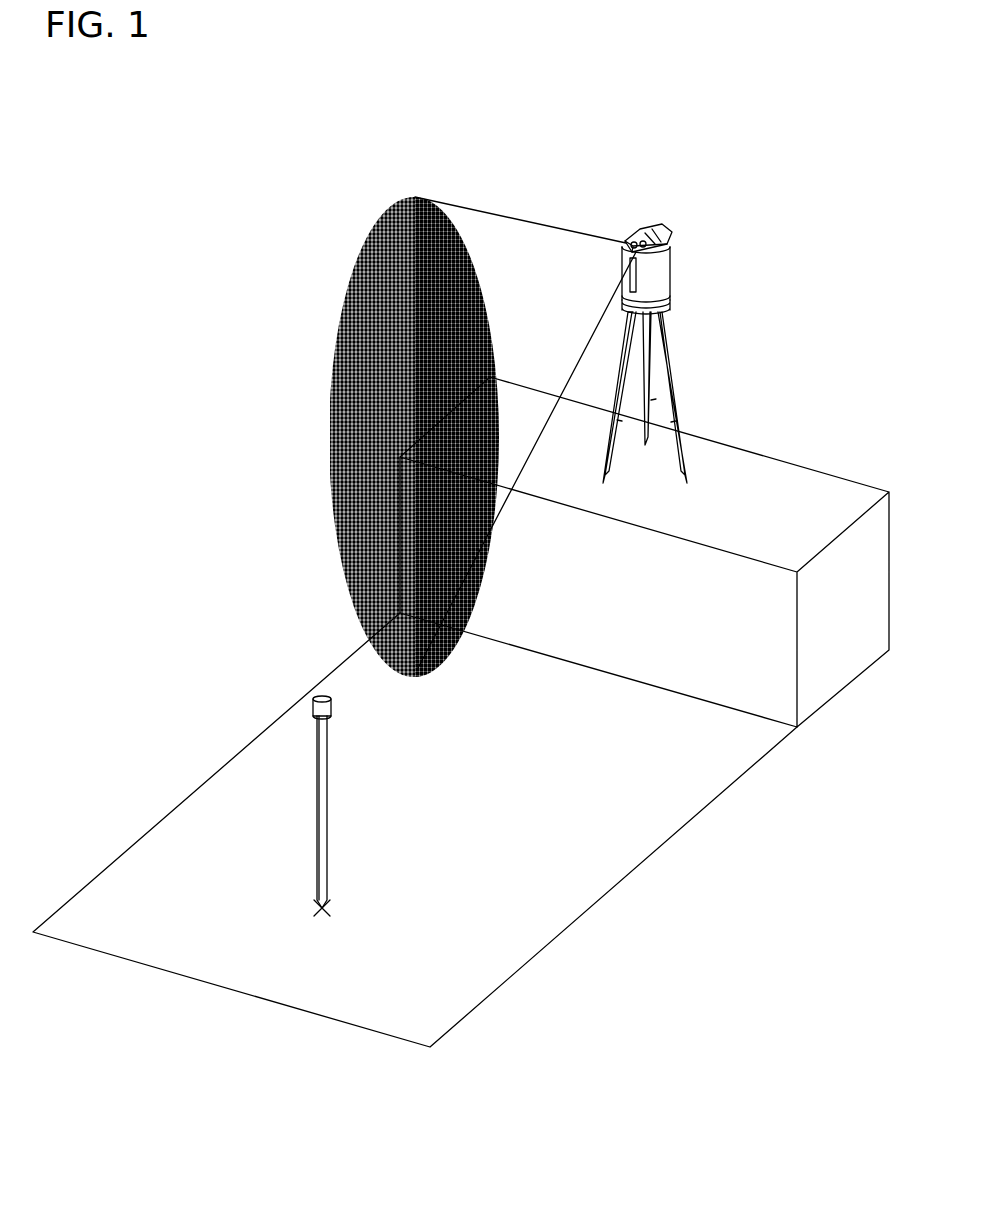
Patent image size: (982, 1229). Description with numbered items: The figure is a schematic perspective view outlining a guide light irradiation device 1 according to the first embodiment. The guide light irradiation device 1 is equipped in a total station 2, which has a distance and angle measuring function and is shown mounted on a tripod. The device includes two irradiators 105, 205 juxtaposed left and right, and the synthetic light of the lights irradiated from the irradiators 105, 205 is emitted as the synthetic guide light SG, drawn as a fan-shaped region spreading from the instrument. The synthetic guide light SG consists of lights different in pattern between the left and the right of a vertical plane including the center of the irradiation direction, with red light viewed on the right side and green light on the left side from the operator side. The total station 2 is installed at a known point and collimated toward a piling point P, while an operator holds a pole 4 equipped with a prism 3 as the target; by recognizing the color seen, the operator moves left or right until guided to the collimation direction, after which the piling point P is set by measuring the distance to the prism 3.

The guide light irradiation device 1 is at (726, 260).
The irradiator 105 is at (652, 228).
The irradiator 205 is at (668, 234).
The total station 2 is at (683, 298).
The prism 3 is at (333, 704).
The pole 4 is at (327, 795).
The piling point P is at (337, 908).
The synthetic guide light SG is at (322, 413).